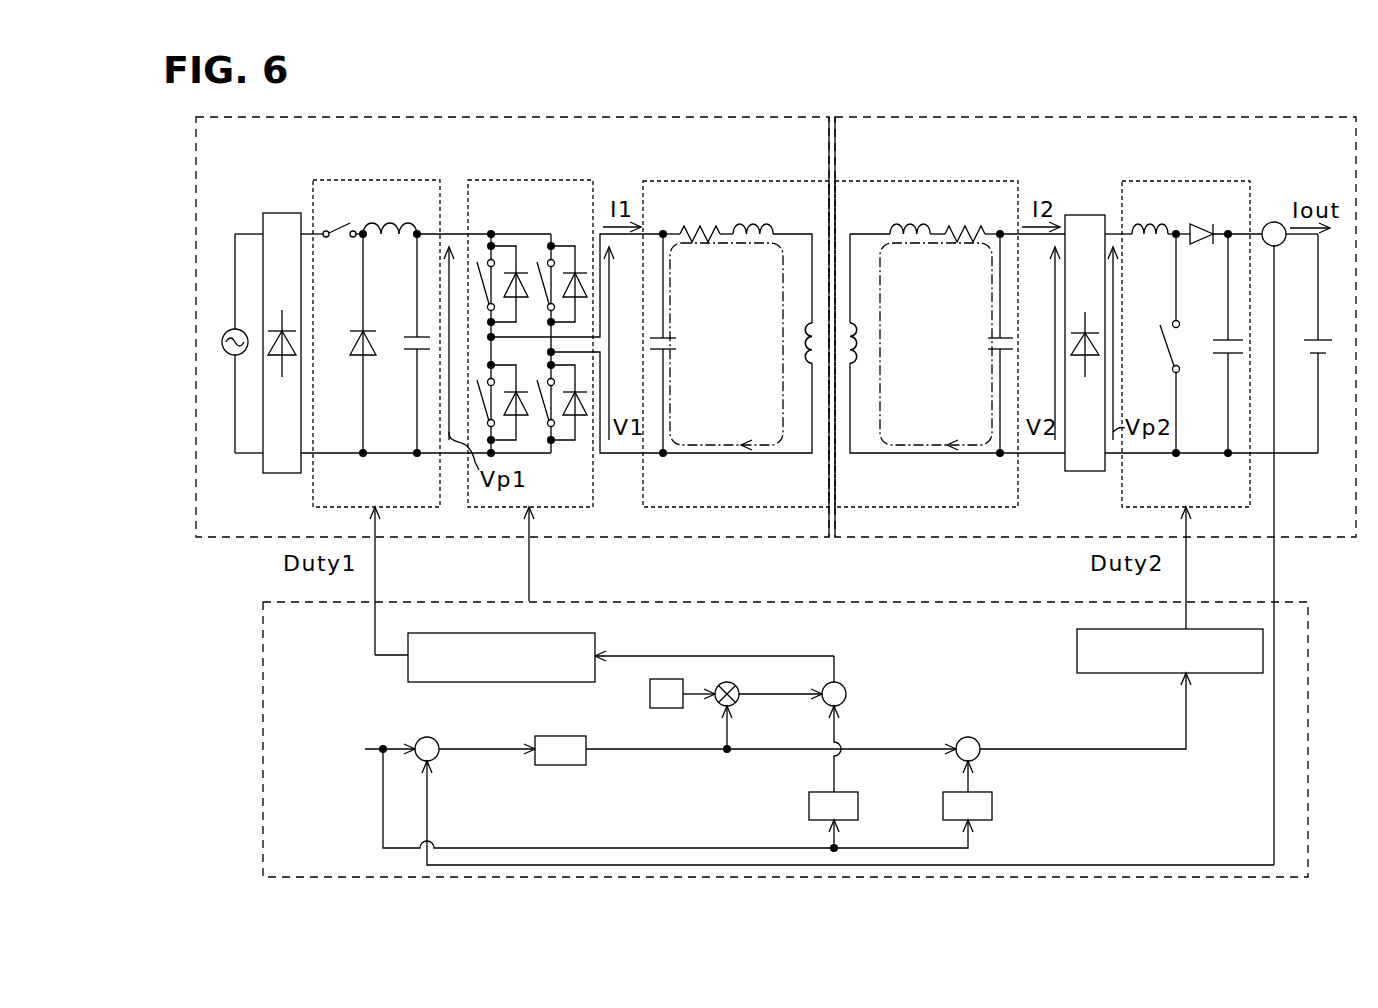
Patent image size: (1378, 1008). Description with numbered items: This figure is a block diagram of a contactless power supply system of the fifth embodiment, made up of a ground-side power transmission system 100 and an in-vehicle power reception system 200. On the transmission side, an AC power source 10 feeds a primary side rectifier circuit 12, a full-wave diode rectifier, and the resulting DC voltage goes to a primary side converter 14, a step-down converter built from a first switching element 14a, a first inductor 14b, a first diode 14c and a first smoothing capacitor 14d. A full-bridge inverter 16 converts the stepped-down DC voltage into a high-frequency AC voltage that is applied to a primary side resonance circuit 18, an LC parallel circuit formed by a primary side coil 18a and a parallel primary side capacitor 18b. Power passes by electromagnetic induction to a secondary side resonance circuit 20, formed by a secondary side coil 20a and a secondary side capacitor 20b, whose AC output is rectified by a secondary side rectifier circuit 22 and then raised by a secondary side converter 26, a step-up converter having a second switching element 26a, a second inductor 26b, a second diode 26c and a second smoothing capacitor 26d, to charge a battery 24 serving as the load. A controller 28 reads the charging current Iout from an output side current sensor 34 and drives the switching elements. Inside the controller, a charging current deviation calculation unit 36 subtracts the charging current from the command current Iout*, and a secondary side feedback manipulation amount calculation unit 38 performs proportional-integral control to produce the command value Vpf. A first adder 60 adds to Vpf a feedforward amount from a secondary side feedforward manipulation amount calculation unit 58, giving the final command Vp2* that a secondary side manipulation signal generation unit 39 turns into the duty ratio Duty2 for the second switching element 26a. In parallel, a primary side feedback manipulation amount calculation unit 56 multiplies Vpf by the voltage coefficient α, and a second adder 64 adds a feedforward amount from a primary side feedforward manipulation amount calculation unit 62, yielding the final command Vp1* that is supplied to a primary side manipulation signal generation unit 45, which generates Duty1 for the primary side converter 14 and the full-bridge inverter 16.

The AC power source 10 is at (223, 330).
The primary side rectifier circuit 12 is at (295, 213).
The primary side converter 14 is at (420, 180).
The first switching element 14a is at (335, 230).
The first inductor 14b is at (392, 226).
The first diode 14c is at (355, 329).
The first smoothing capacitor 14d is at (408, 336).
The full-bridge inverter 16 is at (577, 180).
The primary side resonance circuit 18 is at (807, 180).
The primary side coil 18a is at (801, 345).
The primary side capacitor 18b is at (676, 340).
The secondary side resonance circuit 20 is at (998, 180).
The secondary side coil 20a is at (861, 345).
The secondary side capacitor 20b is at (990, 338).
The secondary side rectifier circuit 22 is at (1093, 215).
The battery 24 is at (1322, 340).
The secondary side converter 26 is at (1233, 180).
The second switching element 26a is at (1162, 333).
The second inductor 26b is at (1143, 226).
The second diode 26c is at (1202, 224).
The second smoothing capacitor 26d is at (1218, 338).
The controller 28 is at (1291, 602).
The output side current sensor 34 is at (1272, 222).
The charging current deviation calculation unit 36 is at (428, 737).
The secondary side feedback manipulation amount calculation unit 38 is at (576, 766).
The secondary side manipulation signal generation unit 39 is at (1200, 625).
The primary side manipulation signal generation unit 45 is at (578, 633).
The primary side feedback manipulation amount calculation unit 56 is at (735, 686).
The secondary side feedforward manipulation amount calculation unit 58 is at (992, 806).
The first adder 60 is at (969, 737).
The primary side feedforward manipulation amount calculation unit 62 is at (858, 806).
The second adder 64 is at (847, 694).
The power transmission system 100 is at (795, 117).
The power reception system 200 is at (1322, 117).